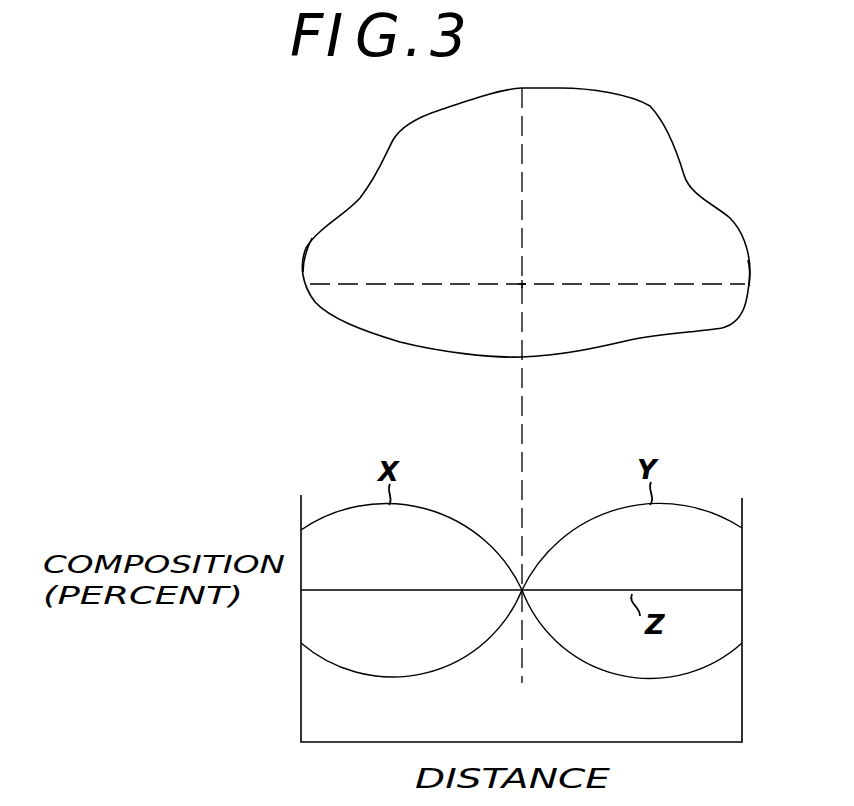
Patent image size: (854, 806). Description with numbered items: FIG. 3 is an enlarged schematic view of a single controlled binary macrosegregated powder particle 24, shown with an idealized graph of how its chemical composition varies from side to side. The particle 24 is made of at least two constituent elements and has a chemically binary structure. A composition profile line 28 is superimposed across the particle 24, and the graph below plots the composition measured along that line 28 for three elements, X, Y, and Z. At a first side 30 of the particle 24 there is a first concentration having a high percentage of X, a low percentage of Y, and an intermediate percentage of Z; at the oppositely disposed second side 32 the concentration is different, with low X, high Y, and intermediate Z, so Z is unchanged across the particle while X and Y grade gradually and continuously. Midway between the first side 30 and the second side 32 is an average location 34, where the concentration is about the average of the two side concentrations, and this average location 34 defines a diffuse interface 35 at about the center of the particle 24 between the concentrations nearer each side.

The controlled binary macrosegregated powder particle 24 is at (393, 140).
The composition profile line 28 is at (403, 284).
The first side 30 is at (302, 260).
The second side 32 is at (750, 272).
The average location 34 is at (522, 222).
The diffuse interface 35 is at (522, 285).